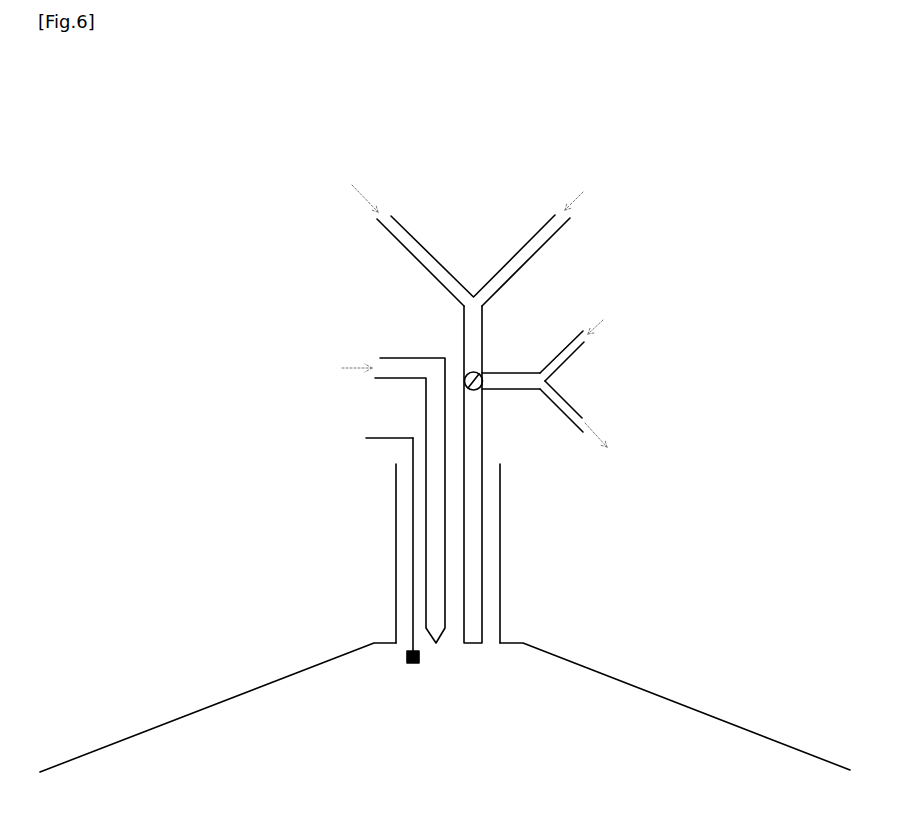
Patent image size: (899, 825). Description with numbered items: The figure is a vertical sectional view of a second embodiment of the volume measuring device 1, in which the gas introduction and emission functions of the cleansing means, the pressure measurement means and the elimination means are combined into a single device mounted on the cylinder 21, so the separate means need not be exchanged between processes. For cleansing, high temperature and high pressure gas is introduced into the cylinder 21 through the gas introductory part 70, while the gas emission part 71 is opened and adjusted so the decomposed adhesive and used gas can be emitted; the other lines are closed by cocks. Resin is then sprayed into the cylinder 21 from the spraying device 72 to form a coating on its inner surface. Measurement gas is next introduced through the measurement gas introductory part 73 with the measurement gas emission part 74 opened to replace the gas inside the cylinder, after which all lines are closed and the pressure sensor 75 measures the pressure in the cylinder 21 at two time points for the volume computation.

The volume measuring device 1 is at (691, 168).
The cylinder 21 is at (577, 692).
The gas introductory part 70 is at (383, 226).
The gas emission part 71 is at (568, 420).
The spraying device 72 is at (428, 383).
The measurement gas introductory part 73 is at (532, 234).
The measurement gas emission part 74 is at (578, 336).
The pressure sensor 75 is at (419, 657).